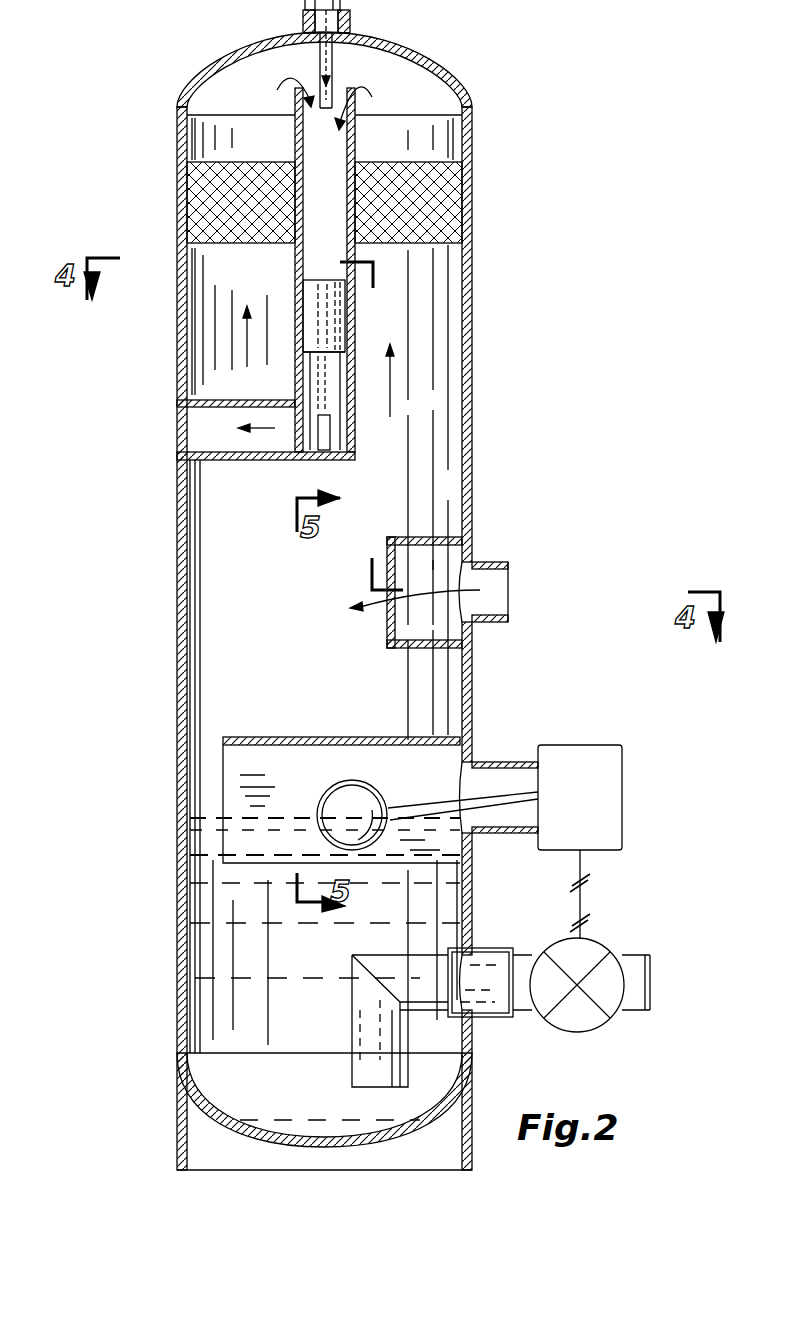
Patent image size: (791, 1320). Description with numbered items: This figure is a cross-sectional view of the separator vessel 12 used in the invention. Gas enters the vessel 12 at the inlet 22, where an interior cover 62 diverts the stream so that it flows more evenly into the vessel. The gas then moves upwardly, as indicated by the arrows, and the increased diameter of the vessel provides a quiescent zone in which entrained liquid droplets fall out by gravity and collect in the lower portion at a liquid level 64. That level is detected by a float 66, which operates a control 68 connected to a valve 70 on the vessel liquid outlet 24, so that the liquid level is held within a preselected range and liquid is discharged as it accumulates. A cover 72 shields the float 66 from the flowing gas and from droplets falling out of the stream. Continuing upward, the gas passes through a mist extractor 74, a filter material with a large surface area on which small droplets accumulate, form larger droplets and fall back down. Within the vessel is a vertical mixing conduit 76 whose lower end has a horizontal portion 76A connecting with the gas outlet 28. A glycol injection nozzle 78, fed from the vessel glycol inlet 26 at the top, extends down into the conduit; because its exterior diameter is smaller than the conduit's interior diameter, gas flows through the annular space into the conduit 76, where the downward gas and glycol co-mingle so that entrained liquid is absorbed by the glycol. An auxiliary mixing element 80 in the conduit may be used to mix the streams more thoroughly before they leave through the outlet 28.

The vessel 12 is at (472, 282).
The inlet 22 is at (490, 562).
The vessel liquid outlet 24 is at (480, 968).
The vessel glycol inlet 26 is at (348, 1).
The gas outlet 28 is at (177, 452).
The cover 62 is at (405, 537).
The liquid level 64 is at (205, 805).
The float 66 is at (332, 825).
The control 68 is at (602, 790).
The valve 70 is at (590, 962).
The cover 72 is at (272, 748).
The mist extractor 74 is at (462, 186).
The vertical mixing conduit 76 is at (300, 272).
The horizontal portion 76A is at (280, 460).
The glycol injection nozzle 78 is at (320, 70).
The auxiliary mixing element 80 is at (322, 323).